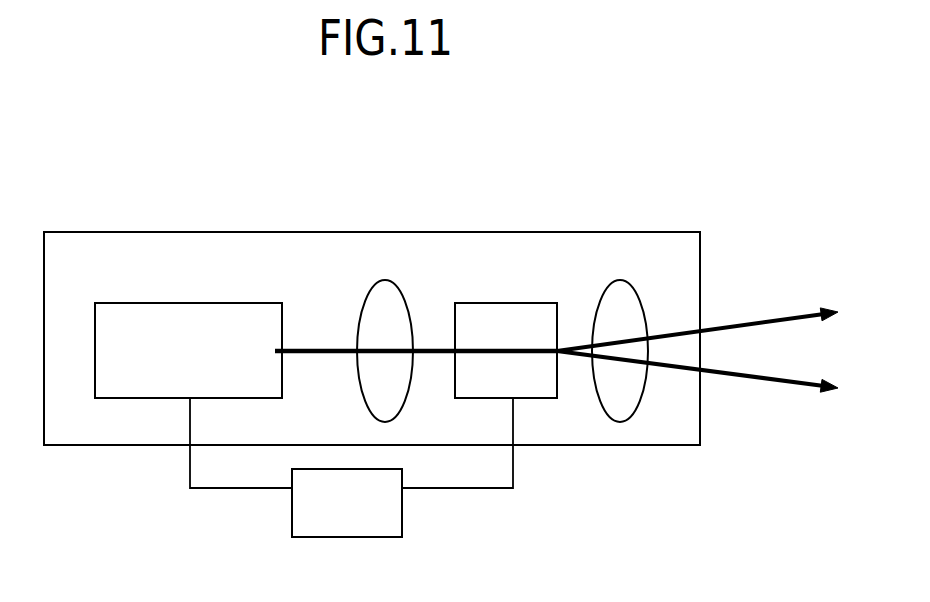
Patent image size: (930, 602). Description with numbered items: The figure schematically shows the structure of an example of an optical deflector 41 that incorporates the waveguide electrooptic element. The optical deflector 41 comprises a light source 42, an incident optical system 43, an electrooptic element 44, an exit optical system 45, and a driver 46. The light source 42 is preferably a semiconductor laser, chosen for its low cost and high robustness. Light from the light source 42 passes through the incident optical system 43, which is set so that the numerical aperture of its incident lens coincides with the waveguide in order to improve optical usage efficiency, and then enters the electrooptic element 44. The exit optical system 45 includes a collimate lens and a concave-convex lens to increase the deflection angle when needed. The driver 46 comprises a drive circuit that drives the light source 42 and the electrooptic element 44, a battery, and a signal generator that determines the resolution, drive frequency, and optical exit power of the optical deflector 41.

The optical deflector 41 is at (270, 232).
The light source 42 is at (177, 303).
The incident optical system 43 is at (386, 278).
The electrooptic element 44 is at (503, 303).
The exit optical system 45 is at (621, 279).
The driver 46 is at (292, 519).